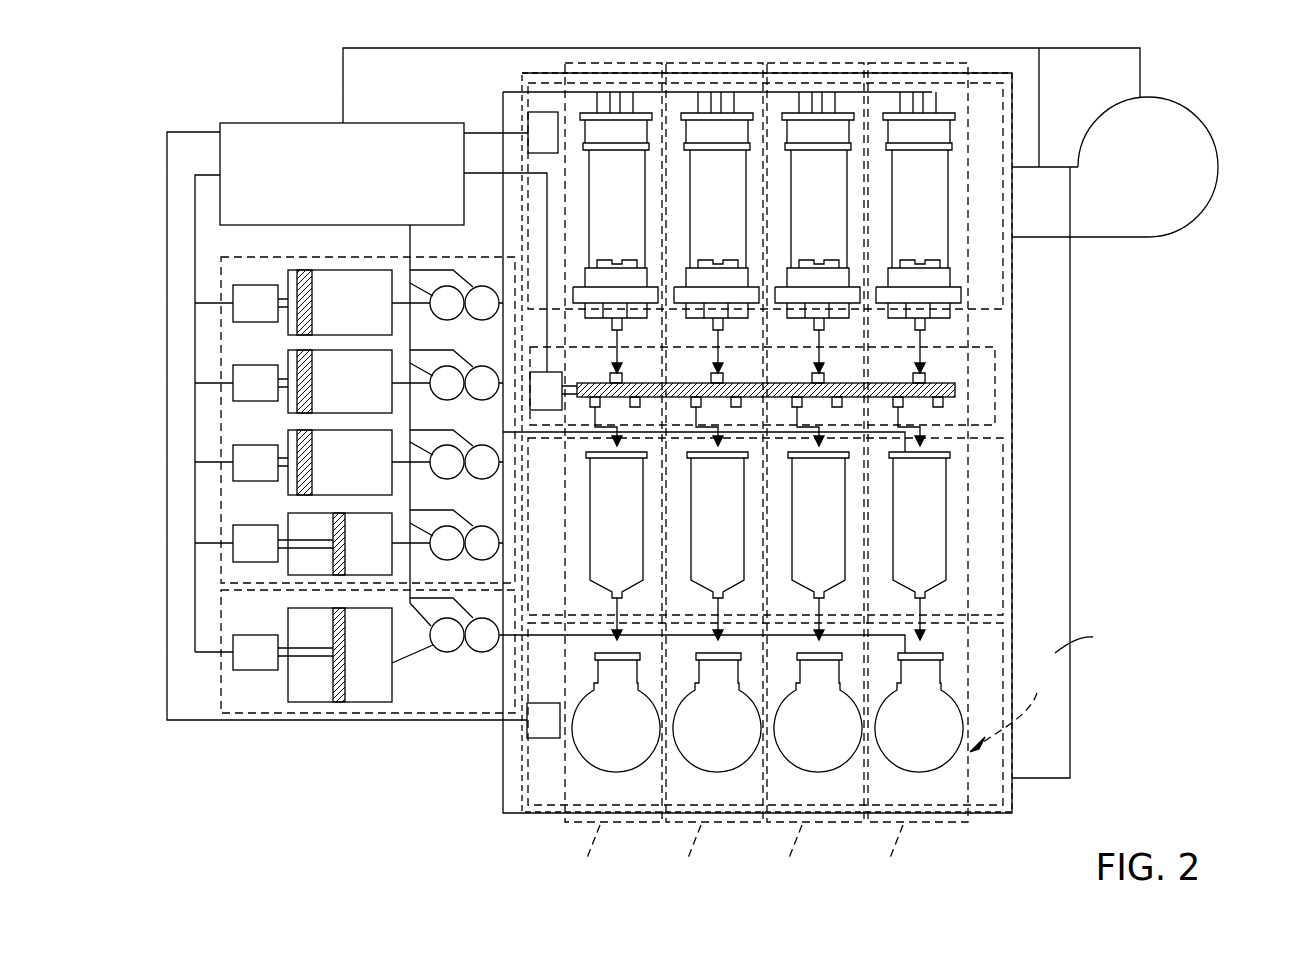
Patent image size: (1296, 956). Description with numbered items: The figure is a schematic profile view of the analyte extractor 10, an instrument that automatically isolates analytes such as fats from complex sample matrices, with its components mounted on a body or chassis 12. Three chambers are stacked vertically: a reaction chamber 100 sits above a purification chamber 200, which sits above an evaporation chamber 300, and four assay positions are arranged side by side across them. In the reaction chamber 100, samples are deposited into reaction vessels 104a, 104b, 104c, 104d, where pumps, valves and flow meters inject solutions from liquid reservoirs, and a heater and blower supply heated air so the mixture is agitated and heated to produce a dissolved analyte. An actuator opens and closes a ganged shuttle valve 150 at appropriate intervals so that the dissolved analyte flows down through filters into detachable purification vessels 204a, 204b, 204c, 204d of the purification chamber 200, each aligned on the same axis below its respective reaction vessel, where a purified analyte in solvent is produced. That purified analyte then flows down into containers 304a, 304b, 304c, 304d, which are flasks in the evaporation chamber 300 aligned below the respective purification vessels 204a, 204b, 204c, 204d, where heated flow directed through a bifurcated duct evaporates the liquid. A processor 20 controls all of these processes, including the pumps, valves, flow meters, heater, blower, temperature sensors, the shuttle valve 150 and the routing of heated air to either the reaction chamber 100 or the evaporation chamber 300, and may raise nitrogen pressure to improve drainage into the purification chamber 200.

The analyte extractor 10 is at (1216, 288).
The body or chassis 12 is at (515, 90).
The processor 20 is at (262, 123).
The reaction chamber 100 is at (987, 287).
The reaction vessel 104a is at (640, 223).
The reaction vessel 104b is at (716, 237).
The reaction vessel 104c is at (817, 237).
The reaction vessel 104d is at (918, 237).
The ganged shuttle valve 150 is at (955, 388).
The purification chamber 200 is at (988, 520).
The purification vessel 204a is at (593, 529).
The purification vessel 204b is at (717, 518).
The purification vessel 204c is at (818, 518).
The purification vessel 204d is at (919, 518).
The evaporation chamber 300 is at (988, 650).
The container 304a is at (641, 746).
The container 304b is at (717, 712).
The container 304c is at (818, 712).
The container 304d is at (919, 712).